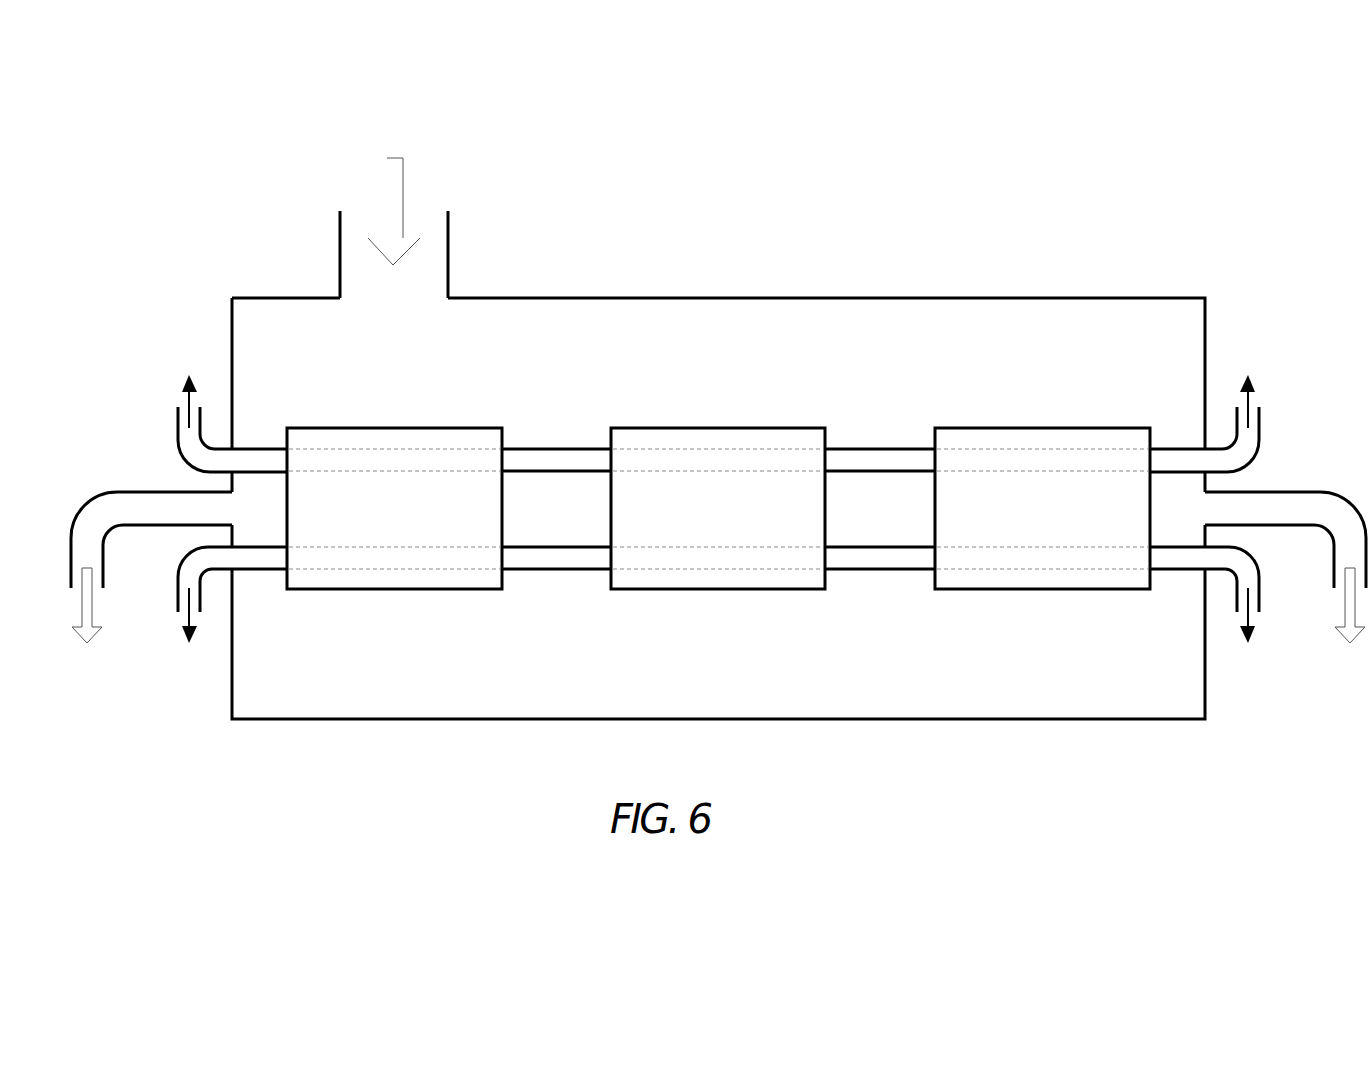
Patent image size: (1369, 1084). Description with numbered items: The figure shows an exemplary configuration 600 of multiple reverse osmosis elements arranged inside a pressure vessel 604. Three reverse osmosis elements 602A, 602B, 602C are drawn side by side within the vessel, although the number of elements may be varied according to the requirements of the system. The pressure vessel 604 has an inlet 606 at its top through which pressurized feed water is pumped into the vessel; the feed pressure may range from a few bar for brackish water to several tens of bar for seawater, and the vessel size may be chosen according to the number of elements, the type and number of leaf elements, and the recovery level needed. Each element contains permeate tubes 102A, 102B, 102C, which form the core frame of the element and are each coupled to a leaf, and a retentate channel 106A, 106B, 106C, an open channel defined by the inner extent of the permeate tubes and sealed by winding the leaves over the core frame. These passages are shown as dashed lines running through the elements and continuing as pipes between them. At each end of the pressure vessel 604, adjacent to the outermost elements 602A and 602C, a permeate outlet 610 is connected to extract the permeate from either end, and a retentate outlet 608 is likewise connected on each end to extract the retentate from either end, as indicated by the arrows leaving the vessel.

The configuration 600 is at (949, 207).
The pressure vessel 604 is at (697, 297).
The inlet 606 is at (437, 277).
The retentate outlet 608 is at (157, 492).
The permeate outlet 610 is at (173, 428).
The permeate tube 102A is at (392, 450).
The permeate tube 102B is at (720, 452).
The permeate tube 102C is at (1058, 450).
The retentate channel 106A is at (395, 527).
The retentate channel 106B is at (723, 525).
The retentate channel 106C is at (1058, 525).
The reverse osmosis element 602A is at (437, 592).
The reverse osmosis element 602B is at (767, 590).
The reverse osmosis element 602C is at (1102, 590).